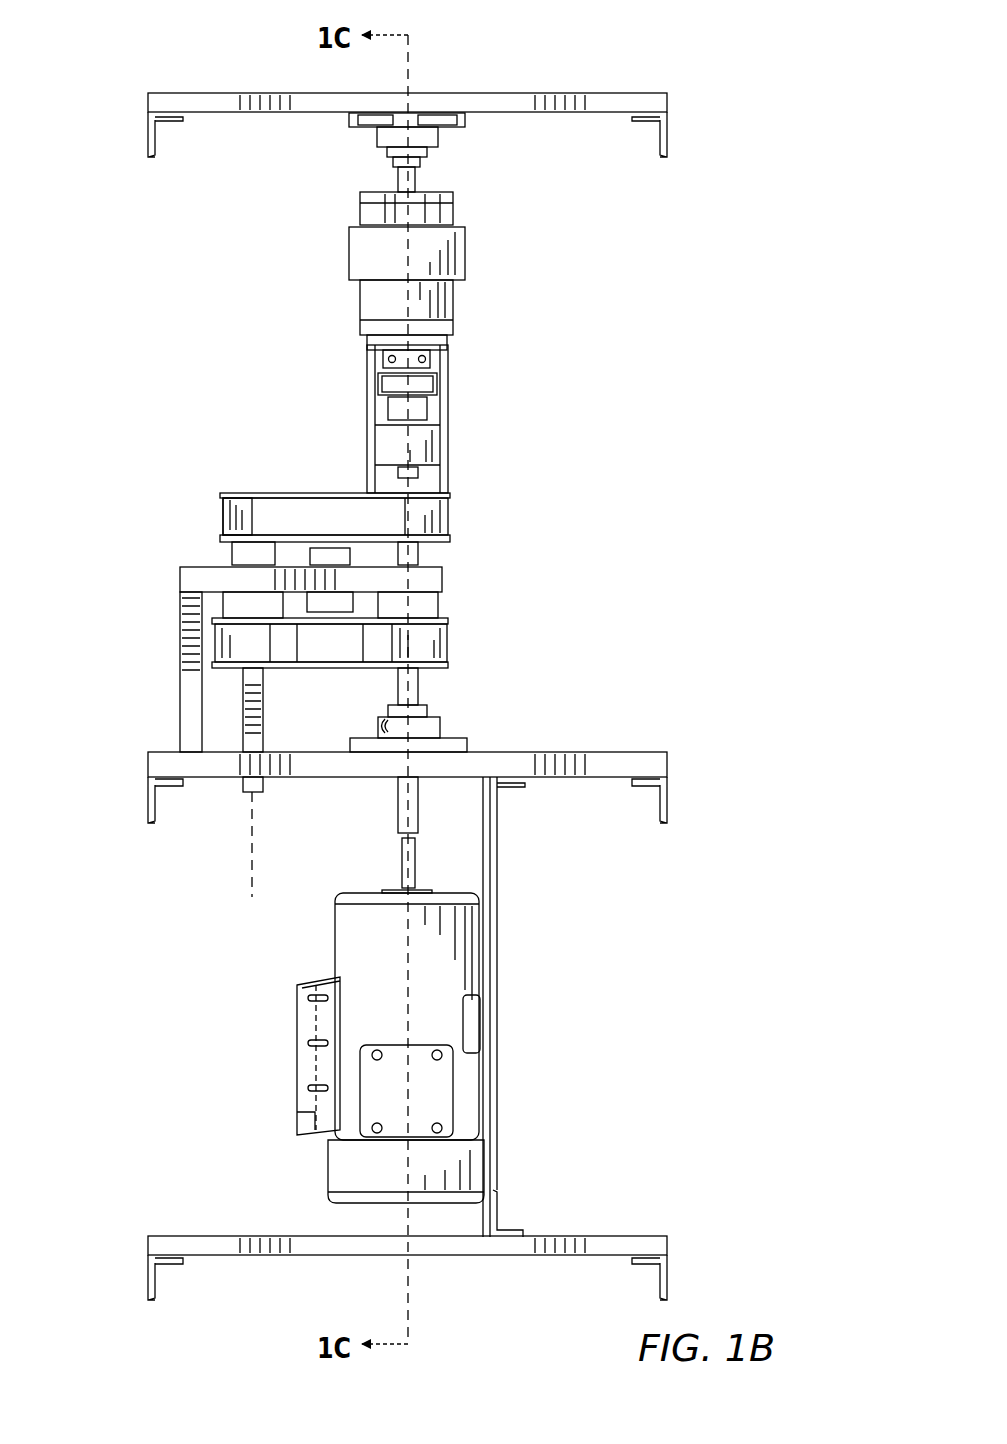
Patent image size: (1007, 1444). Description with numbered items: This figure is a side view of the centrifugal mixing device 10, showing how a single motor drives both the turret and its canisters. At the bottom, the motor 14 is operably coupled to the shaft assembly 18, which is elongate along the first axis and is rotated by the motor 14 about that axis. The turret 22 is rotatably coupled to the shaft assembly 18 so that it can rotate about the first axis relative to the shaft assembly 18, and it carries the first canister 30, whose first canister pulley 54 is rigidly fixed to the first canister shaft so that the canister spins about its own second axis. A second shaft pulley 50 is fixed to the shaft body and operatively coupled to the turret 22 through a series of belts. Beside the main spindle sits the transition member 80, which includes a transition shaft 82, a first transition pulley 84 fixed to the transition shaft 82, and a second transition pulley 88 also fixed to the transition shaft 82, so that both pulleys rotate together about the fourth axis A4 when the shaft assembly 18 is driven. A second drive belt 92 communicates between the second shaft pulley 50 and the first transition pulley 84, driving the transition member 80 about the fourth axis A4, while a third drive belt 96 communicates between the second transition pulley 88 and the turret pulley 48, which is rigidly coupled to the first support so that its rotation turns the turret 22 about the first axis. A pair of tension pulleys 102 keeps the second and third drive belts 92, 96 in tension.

The centrifugal mixing device 10 is at (146, 51).
The motor 14 is at (335, 930).
The shaft assembly 18 is at (424, 691).
The turret 22 is at (470, 262).
The first canister 30 is at (370, 290).
The turret pulley 48 is at (361, 482).
The second shaft pulley 50 is at (367, 685).
The first canister pulley 54 is at (440, 375).
The transition member 80 is at (277, 650).
The transition shaft 82 is at (245, 748).
The first transition pulley 84 is at (222, 668).
The second transition pulley 88 is at (235, 492).
The second drive belt 92 is at (290, 645).
The third drive belt 96 is at (282, 515).
The tension pulleys 102 is at (348, 492).
The fourth axis A4 is at (252, 848).